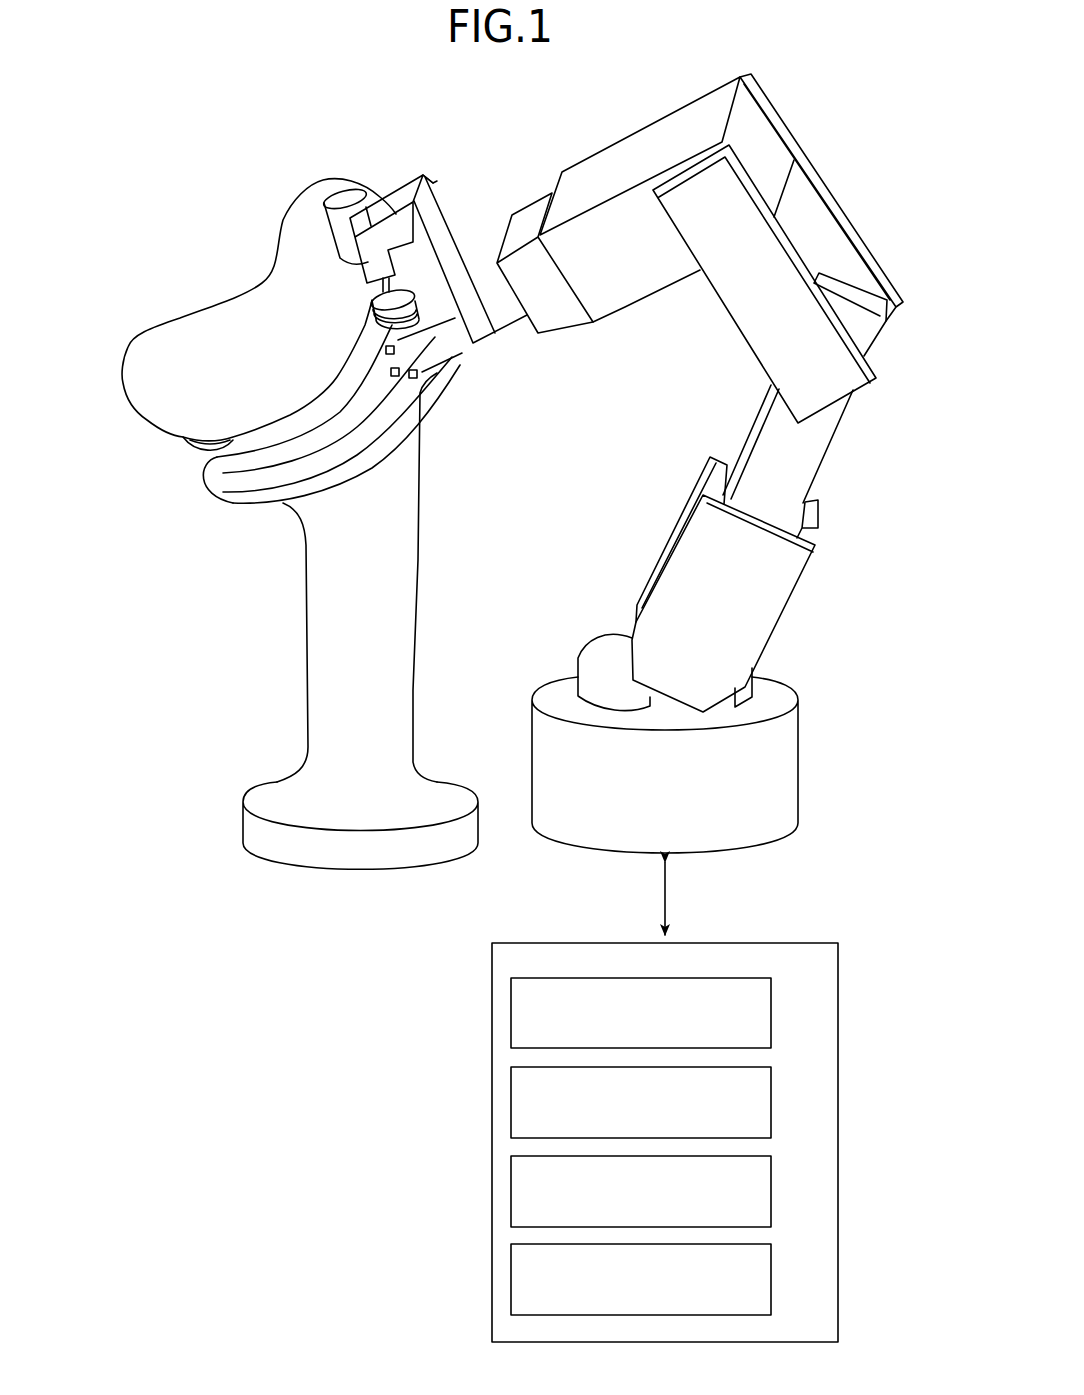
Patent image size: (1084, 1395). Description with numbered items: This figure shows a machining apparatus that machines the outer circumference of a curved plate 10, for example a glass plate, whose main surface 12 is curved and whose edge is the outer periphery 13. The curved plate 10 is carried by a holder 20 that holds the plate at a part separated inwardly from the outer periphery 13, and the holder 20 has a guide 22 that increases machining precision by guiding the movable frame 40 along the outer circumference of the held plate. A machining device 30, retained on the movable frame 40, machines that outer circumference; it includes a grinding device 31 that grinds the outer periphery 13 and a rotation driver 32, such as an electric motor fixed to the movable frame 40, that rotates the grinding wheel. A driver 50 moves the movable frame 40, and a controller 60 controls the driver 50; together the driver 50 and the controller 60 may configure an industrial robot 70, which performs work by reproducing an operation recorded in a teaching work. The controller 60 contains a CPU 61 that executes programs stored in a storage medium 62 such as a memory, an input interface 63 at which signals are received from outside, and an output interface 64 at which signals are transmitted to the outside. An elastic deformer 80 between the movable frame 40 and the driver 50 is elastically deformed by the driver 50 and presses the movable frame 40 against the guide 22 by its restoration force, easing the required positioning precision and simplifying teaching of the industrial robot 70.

The curved plate 10 is at (118, 410).
The main surface 12 is at (140, 362).
The outer periphery 13 is at (180, 442).
The holder 20 is at (203, 504).
The guide 22 is at (218, 483).
The machining device 30 is at (520, 158).
The grinding device 31 is at (400, 282).
The rotation driver 32 is at (373, 275).
The movable frame 40 is at (443, 338).
The driver 50 is at (808, 653).
The controller 60 is at (752, 930).
The CPU 61 is at (775, 1013).
The storage medium 62 is at (775, 1103).
The input interface 63 is at (775, 1190).
The output interface 64 is at (775, 1278).
The industrial robot 70 is at (917, 785).
The elastic deformer 80 is at (521, 337).